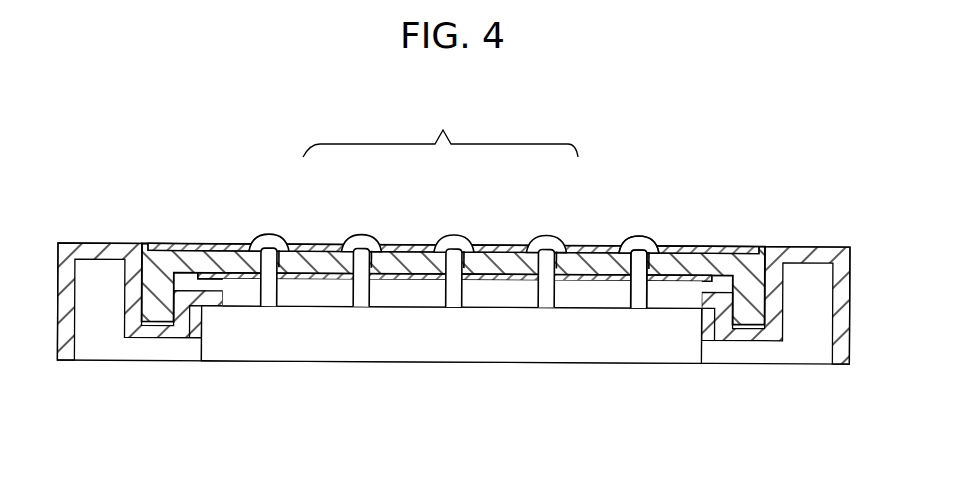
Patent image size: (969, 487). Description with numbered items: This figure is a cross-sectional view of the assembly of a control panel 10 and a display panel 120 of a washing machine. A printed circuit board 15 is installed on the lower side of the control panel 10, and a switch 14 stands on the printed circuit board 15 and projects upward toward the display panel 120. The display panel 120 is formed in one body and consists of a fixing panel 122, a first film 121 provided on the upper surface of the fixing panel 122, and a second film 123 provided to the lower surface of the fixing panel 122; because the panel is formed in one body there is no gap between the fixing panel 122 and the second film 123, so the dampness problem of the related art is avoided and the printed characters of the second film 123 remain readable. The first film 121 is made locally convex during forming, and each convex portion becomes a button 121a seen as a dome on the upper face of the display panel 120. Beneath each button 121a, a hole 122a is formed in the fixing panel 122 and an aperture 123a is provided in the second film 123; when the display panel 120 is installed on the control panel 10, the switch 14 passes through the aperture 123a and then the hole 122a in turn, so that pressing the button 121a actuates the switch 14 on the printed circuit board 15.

The control panel 10 is at (108, 244).
The switch 14 is at (548, 300).
The printed circuit board 15 is at (377, 345).
The display panel 120 is at (440, 128).
The first film 121 is at (404, 255).
The button 121a is at (457, 236).
The fixing panel 122 is at (307, 256).
The hole 122a is at (634, 249).
The second film 123 is at (578, 252).
The aperture 123a is at (640, 253).